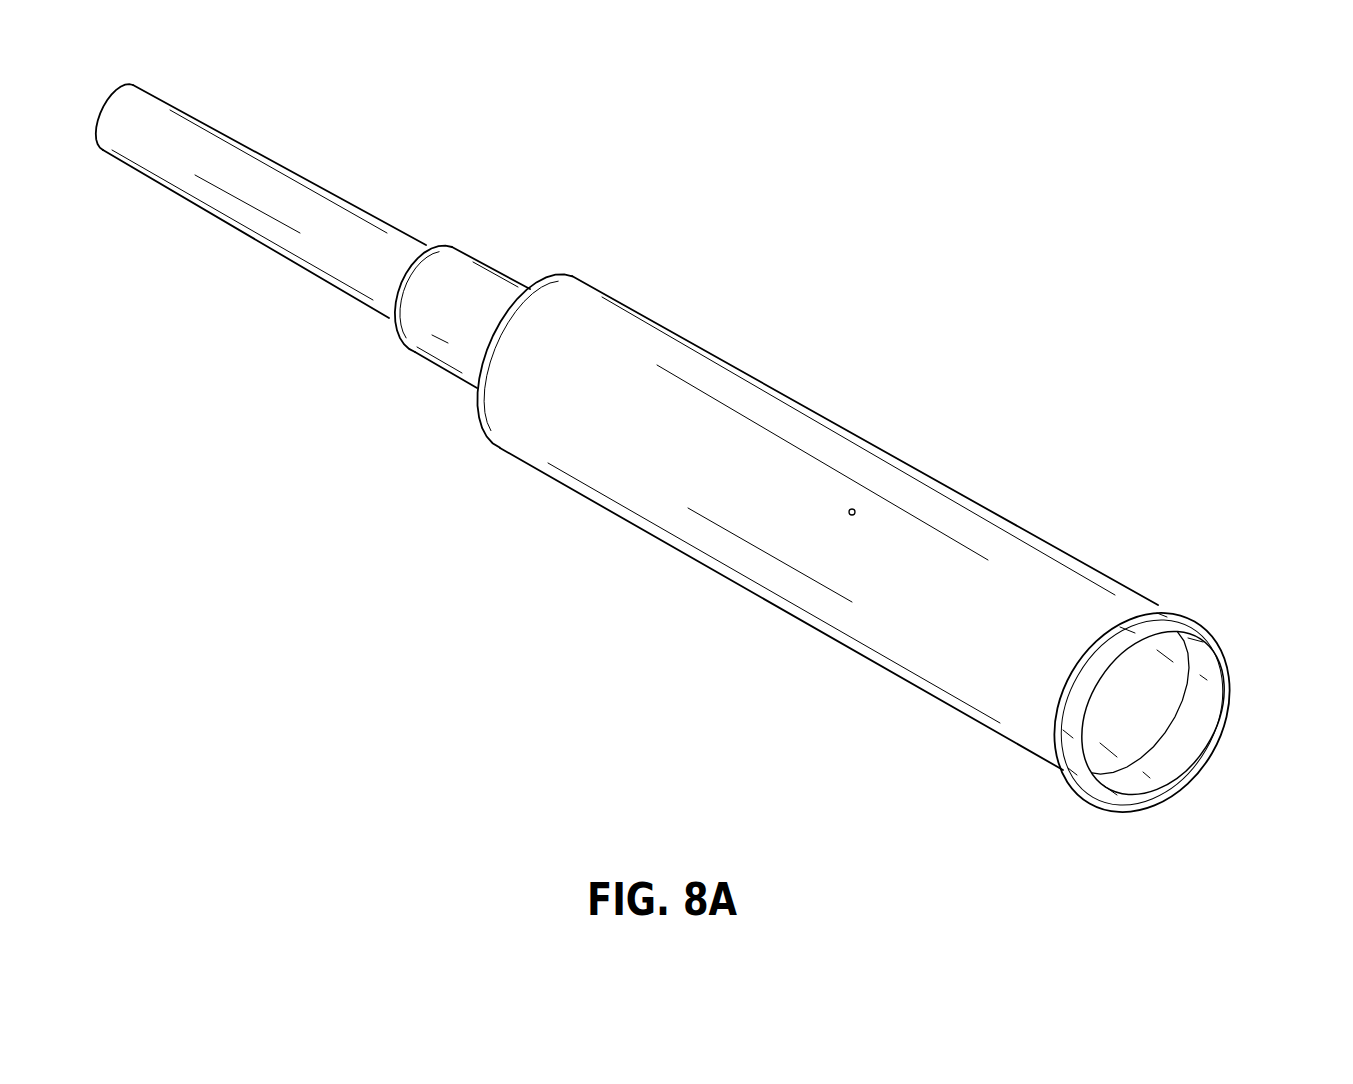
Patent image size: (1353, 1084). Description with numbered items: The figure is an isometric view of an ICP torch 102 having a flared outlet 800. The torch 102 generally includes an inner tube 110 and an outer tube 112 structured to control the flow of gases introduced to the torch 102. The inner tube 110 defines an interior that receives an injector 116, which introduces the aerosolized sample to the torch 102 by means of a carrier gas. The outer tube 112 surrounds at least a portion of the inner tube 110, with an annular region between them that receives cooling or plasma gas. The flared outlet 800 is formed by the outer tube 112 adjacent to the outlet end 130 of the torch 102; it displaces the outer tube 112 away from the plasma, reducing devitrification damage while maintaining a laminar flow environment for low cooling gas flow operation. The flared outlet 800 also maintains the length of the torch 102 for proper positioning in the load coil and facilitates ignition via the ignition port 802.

The torch 102 is at (704, 464).
The injector 116 is at (258, 178).
The inner tube 110 is at (470, 277).
The outer tube 112 is at (637, 337).
The ignition port 802 is at (853, 503).
The flared outlet 800 is at (1175, 613).
The outlet end 130 is at (1230, 660).